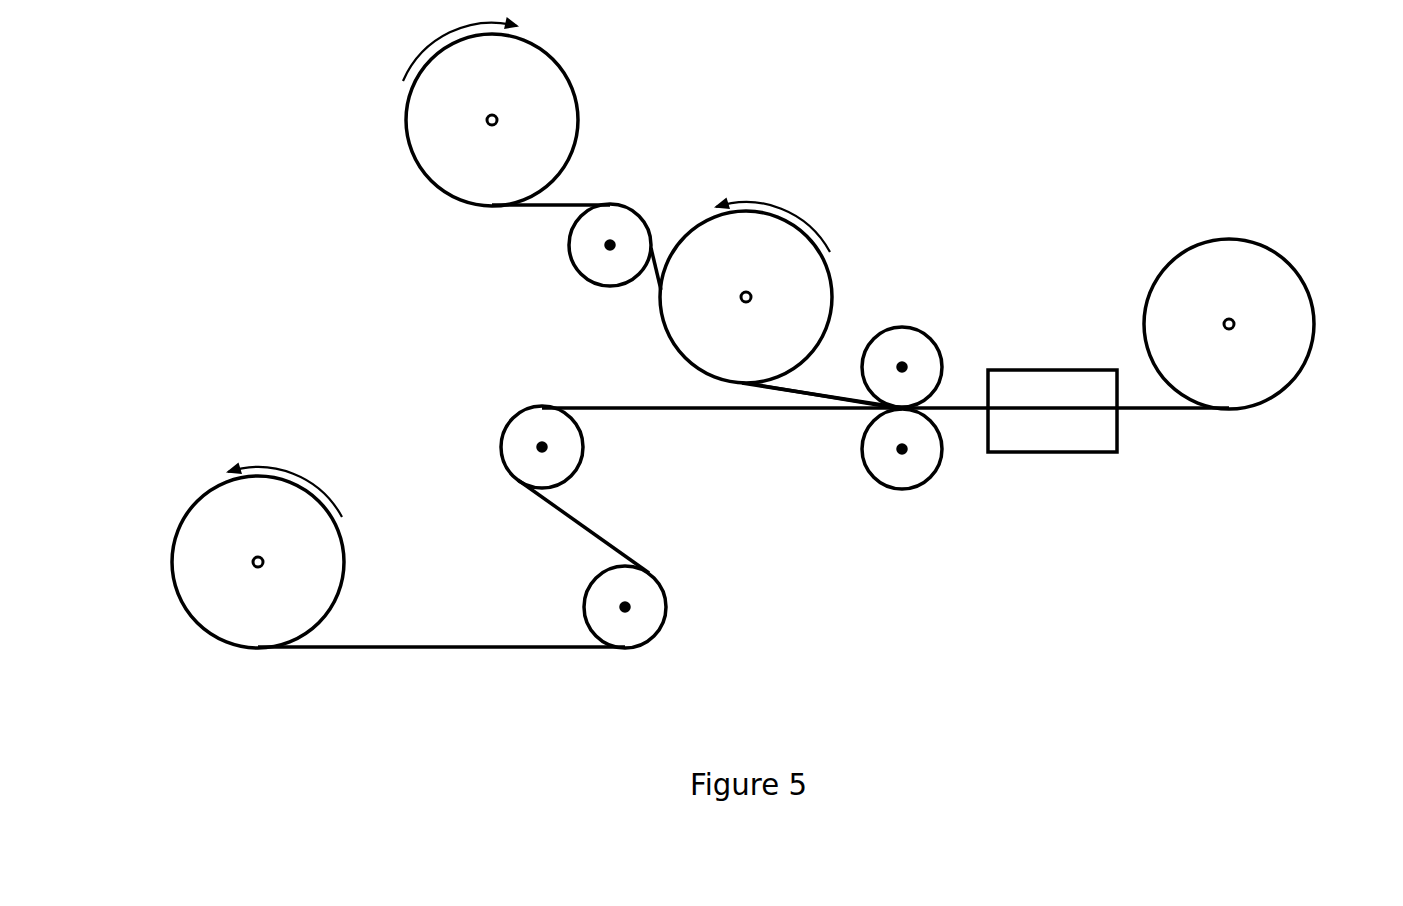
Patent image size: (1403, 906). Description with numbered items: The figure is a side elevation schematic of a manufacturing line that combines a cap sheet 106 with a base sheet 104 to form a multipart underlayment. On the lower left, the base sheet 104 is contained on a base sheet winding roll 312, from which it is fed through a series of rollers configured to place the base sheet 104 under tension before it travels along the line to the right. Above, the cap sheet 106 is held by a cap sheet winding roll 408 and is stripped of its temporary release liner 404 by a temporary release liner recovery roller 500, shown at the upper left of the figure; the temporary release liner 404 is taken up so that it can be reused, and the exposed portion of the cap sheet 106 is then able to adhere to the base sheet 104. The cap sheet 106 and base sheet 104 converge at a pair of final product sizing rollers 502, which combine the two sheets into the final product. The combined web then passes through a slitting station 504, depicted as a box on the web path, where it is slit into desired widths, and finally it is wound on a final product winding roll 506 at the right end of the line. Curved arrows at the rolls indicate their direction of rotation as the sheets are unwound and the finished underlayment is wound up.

The temporary release liner 404 is at (349, 149).
The temporary release liner recovery roller 500 is at (430, 183).
The cap sheet 106 is at (796, 246).
The cap sheet winding roll 408 is at (796, 297).
The base sheet 104 is at (265, 521).
The base sheet winding roll 312 is at (175, 597).
The final product sizing rollers 502 is at (905, 495).
The slitting station 504 is at (1070, 453).
The final product winding roll 506 is at (1223, 236).